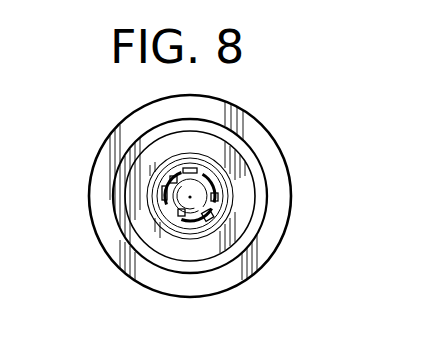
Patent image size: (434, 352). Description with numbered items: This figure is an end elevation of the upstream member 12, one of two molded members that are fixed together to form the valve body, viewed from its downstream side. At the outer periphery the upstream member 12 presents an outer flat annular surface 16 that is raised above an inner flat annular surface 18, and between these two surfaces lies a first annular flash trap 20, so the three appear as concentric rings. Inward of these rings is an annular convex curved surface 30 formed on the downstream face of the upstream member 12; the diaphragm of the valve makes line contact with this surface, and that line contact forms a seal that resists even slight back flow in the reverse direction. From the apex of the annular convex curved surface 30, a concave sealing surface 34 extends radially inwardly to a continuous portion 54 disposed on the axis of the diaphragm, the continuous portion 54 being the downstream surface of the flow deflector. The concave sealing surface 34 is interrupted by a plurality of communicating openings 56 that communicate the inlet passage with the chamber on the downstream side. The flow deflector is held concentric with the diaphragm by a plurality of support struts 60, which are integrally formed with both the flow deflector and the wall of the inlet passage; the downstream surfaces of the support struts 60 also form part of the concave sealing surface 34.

The upstream member 12 is at (268, 114).
The outer flat annular surface 16 is at (190, 105).
The inner flat annular surface 18 is at (145, 150).
The first annular flash trap 20 is at (255, 162).
The annular convex curved surface 30 is at (233, 181).
The concave sealing surface 34 is at (172, 210).
The continuous portion 54 is at (190, 198).
The communicating openings 56 is at (200, 172).
The support struts 60 is at (173, 180).